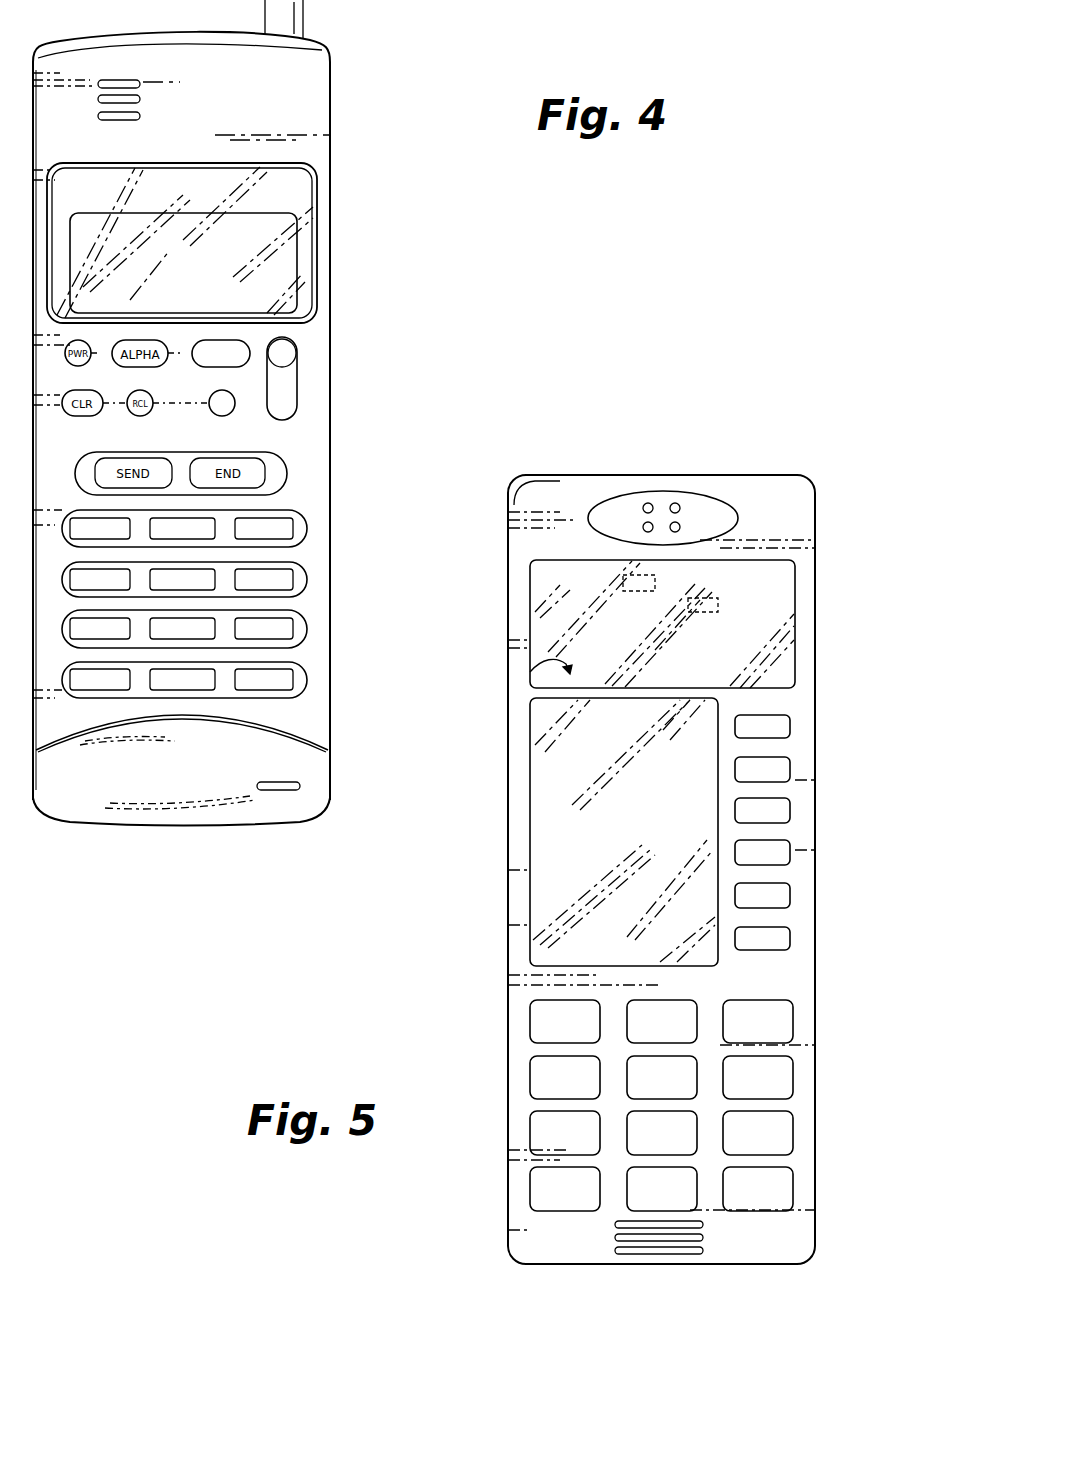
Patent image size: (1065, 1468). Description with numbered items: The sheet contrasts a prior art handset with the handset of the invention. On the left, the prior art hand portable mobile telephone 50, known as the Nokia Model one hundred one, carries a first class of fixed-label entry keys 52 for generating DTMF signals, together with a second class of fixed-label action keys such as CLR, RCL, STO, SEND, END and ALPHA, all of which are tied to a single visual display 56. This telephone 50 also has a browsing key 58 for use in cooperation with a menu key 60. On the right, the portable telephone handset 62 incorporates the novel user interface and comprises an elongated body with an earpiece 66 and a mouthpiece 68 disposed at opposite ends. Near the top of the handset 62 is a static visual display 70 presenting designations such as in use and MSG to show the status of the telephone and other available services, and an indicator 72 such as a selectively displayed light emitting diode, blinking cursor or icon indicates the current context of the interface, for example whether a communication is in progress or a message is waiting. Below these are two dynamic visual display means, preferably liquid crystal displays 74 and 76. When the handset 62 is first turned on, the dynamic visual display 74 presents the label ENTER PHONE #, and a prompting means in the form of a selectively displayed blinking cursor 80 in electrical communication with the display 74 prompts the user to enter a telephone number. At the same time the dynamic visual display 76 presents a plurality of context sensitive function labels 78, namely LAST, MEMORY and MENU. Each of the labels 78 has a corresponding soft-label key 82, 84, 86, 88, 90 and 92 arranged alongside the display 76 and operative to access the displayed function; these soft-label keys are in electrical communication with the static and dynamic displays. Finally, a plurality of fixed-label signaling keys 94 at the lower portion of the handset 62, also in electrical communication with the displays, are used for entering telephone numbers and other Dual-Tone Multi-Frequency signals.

In FIG. 4, the hand portable mobile telephone 50 is at (336, 126).
In FIG. 4, the fixed-label entry keys 52 is at (296, 582).
In FIG. 4, the visual display 56 is at (296, 228).
In FIG. 4, the browsing key 58 is at (300, 376).
In FIG. 4, the menu key 60 is at (246, 342).
In FIG. 5, the portable telephone handset 62 is at (815, 616).
In FIG. 5, the earpiece 66 is at (683, 495).
In FIG. 5, the mouthpiece 68 is at (703, 1252).
In FIG. 5, the static visual display 70 is at (540, 583).
In FIG. 5, the indicator 72 is at (715, 598).
In FIG. 5, the dynamic visual display 74 is at (540, 621).
In FIG. 5, the dynamic visual display 76 is at (530, 728).
In FIG. 5, the context sensitive function labels 78 is at (613, 796).
In FIG. 5, the blinking cursor 80 is at (530, 672).
In FIG. 5, the soft-label key 82 is at (790, 727).
In FIG. 5, the soft-label key 84 is at (790, 770).
In FIG. 5, the soft-label key 86 is at (790, 811).
In FIG. 5, the soft-label key 88 is at (790, 853).
In FIG. 5, the soft-label key 90 is at (790, 896).
In FIG. 5, the soft-label key 92 is at (790, 938).
In FIG. 5, the fixed-label signaling keys 94 is at (793, 1172).